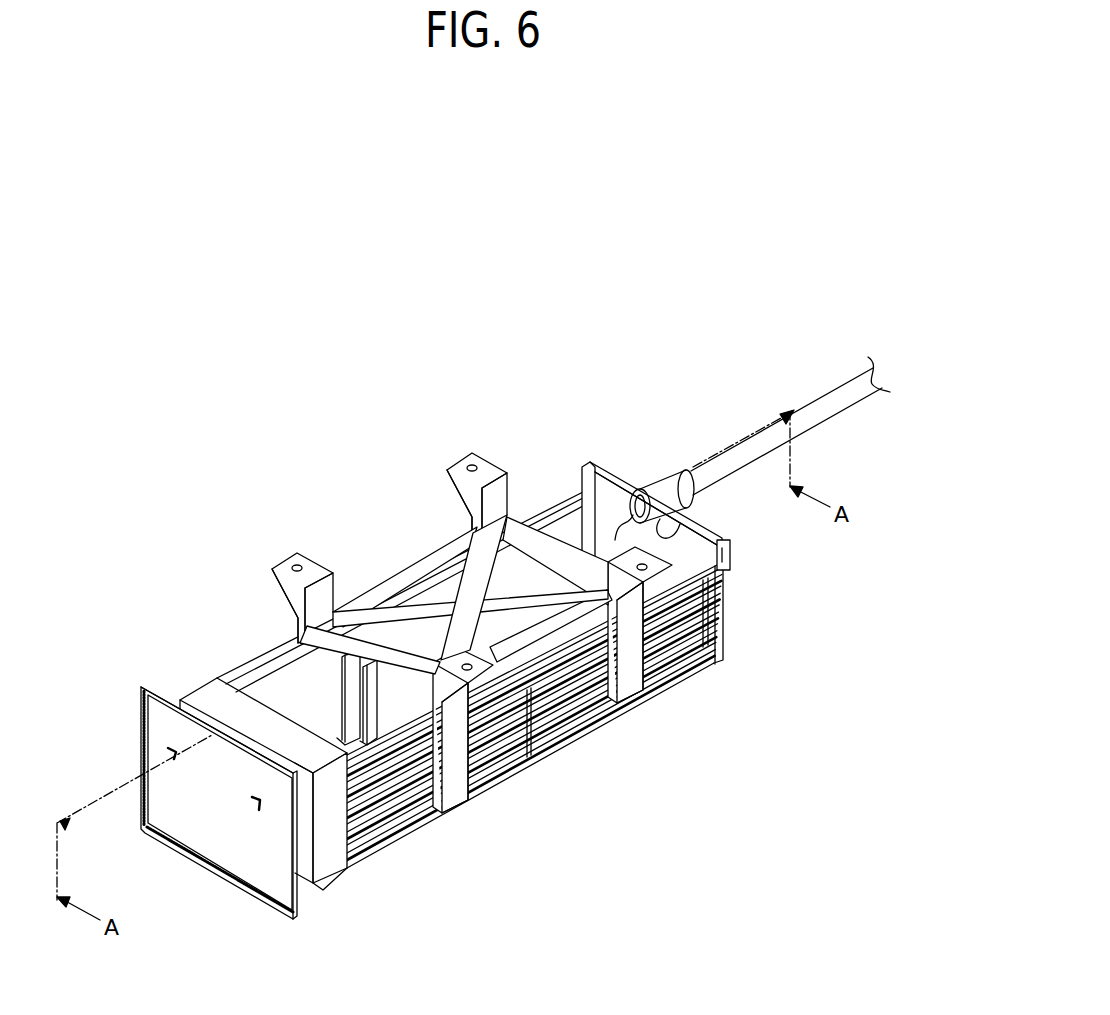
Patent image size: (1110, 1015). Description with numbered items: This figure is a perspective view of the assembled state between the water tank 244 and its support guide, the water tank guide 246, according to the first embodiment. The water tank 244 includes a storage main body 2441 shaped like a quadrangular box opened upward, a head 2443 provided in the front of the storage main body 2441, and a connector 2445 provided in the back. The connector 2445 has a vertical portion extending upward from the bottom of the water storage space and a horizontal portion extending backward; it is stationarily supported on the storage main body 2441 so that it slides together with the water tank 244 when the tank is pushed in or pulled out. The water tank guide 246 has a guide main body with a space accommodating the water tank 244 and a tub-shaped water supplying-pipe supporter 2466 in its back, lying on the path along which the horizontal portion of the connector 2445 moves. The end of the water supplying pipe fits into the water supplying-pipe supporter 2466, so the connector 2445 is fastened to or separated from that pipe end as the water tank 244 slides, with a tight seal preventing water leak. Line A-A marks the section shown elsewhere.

The water tank guide 246 is at (556, 765).
The water tank 244 is at (262, 903).
The storage main body 2441 is at (288, 682).
The head 2443 is at (167, 730).
The connector 2445 is at (617, 535).
The water supplying-pipe supporter 2466 is at (656, 480).